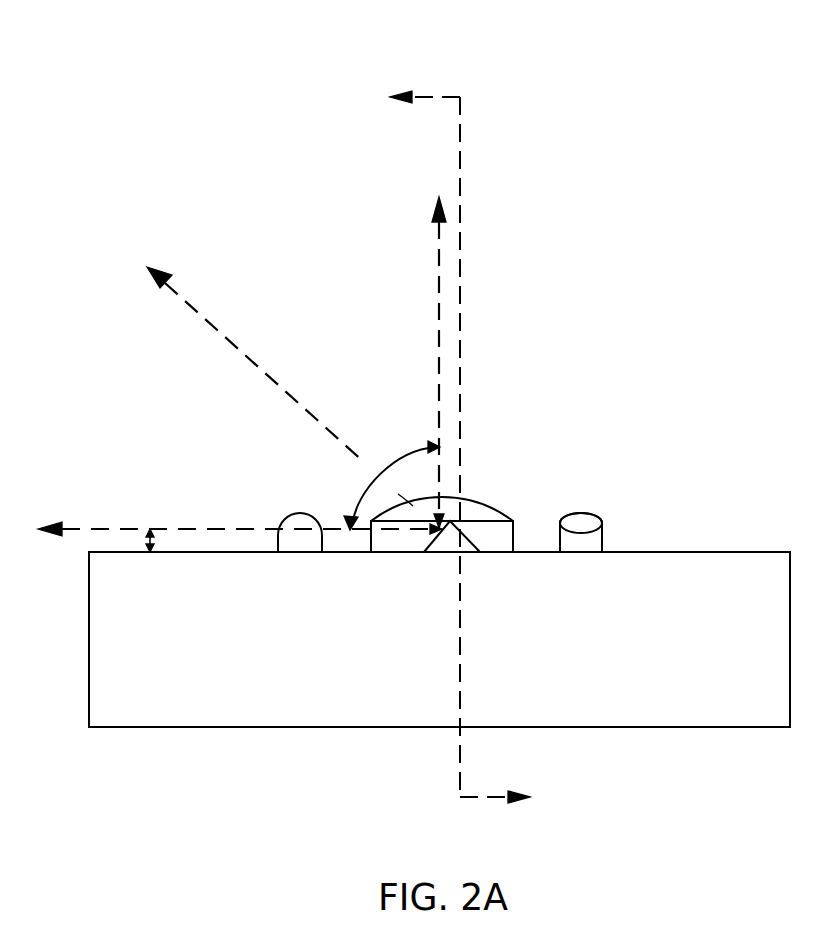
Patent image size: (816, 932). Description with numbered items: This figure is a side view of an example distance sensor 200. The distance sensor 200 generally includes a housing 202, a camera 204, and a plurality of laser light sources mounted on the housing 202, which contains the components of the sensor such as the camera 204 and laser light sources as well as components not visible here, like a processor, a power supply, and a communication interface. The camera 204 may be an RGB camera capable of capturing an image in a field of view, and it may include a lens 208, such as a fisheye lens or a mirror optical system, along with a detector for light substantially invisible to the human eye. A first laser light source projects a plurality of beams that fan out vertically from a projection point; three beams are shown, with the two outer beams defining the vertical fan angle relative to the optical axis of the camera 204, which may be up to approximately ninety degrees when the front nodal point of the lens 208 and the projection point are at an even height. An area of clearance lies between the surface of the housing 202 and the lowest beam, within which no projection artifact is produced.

The distance sensor 200 is at (82, 46).
The housing 202 is at (782, 651).
The camera 204 is at (536, 533).
The lens 208 is at (499, 507).